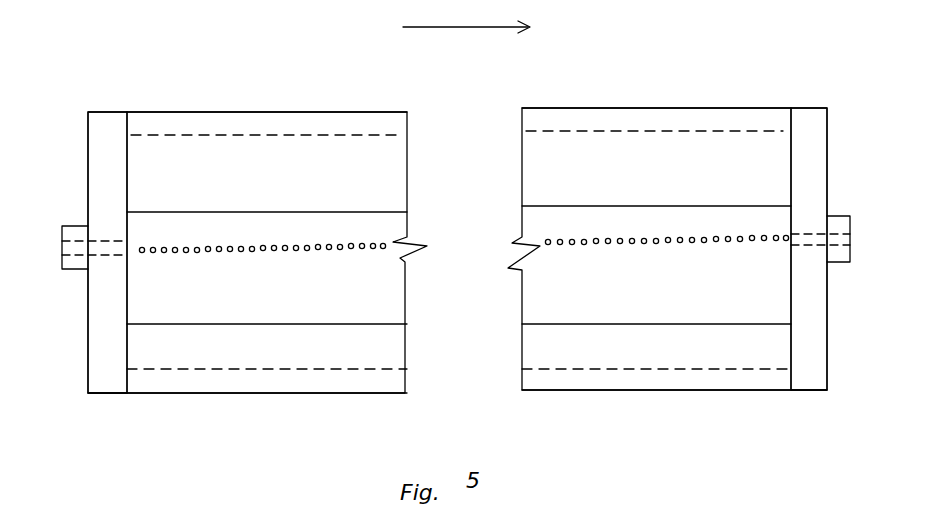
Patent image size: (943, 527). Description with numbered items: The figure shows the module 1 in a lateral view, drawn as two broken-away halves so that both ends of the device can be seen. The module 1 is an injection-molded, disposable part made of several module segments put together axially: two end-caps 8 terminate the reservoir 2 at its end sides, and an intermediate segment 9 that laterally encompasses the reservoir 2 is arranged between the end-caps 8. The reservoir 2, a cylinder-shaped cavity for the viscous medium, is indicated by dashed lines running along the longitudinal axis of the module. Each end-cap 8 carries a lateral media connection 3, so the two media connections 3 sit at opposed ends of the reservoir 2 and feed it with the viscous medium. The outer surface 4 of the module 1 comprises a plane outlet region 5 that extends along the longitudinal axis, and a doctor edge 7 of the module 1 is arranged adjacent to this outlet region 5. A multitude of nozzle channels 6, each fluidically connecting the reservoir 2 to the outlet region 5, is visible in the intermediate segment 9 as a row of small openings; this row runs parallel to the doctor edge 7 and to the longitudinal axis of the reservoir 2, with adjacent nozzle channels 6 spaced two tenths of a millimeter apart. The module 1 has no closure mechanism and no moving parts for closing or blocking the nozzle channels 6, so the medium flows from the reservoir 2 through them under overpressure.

The module 1 is at (217, 60).
The reservoir 2 is at (300, 134).
The media connection 3 is at (70, 226).
The outer surface 4 is at (161, 112).
The outlet region 5 is at (390, 295).
The nozzle channel 6 is at (240, 256).
The doctor edge 7 is at (383, 210).
The end-cap 8 is at (98, 112).
The intermediate segment 9 is at (228, 393).